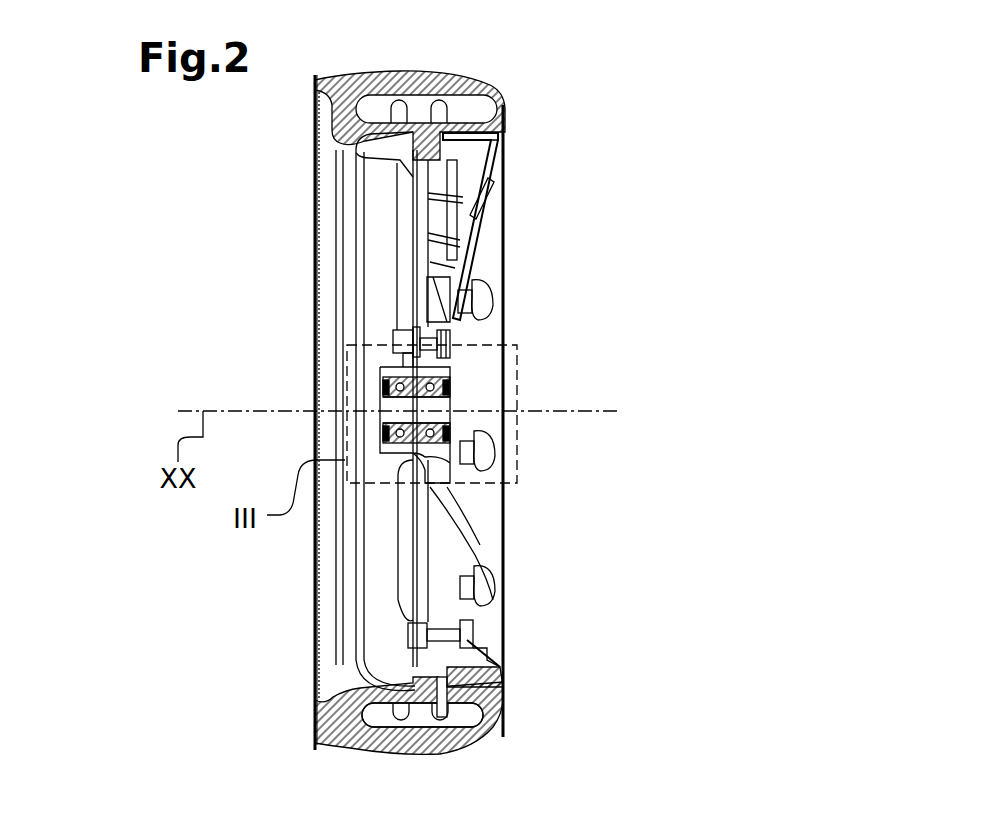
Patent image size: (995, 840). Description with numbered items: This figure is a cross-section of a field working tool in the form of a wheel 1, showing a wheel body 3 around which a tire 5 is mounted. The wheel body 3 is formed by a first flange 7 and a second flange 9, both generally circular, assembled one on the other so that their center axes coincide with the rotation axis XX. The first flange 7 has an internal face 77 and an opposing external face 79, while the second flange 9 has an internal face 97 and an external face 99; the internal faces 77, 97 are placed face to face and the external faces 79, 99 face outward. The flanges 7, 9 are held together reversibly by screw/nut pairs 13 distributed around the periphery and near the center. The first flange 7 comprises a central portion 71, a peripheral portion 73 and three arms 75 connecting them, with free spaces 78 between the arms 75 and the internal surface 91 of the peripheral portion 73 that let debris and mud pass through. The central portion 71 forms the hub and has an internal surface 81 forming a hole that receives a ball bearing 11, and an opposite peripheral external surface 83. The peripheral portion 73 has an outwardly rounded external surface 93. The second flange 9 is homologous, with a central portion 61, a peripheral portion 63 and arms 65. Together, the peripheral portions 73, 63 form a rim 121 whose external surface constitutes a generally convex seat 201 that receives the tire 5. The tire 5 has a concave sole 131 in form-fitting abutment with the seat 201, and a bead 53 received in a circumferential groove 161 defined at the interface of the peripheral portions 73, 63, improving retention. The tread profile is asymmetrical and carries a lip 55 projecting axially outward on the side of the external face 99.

The wheel 1 is at (572, 62).
The wheel body 3 is at (545, 295).
The tire 5 is at (390, 750).
The first flange 7 is at (470, 184).
The second flange 9 is at (383, 245).
The ball bearing 11 is at (383, 412).
The screw/nut pairs 13 is at (478, 325).
The bead 53 is at (428, 140).
The lip 55 is at (325, 740).
The central portion 61 is at (400, 348).
The peripheral portion 63 is at (360, 670).
The arms 65 is at (410, 228).
The central portion 71 is at (453, 360).
The peripheral portion 73 is at (478, 668).
The arms 75 is at (450, 223).
The internal face 77 is at (407, 193).
The spaces 78 is at (442, 552).
The external face 79 is at (478, 282).
The internal surface 81 is at (455, 410).
The peripheral external surface 83 is at (453, 495).
The internal surface 91 is at (478, 642).
The external surface 93 is at (477, 690).
The internal face 97 is at (410, 280).
The external face 99 is at (400, 263).
The rim 121 is at (440, 162).
The sole 131 is at (380, 127).
The groove 161 is at (447, 680).
The seat 201 is at (465, 708).